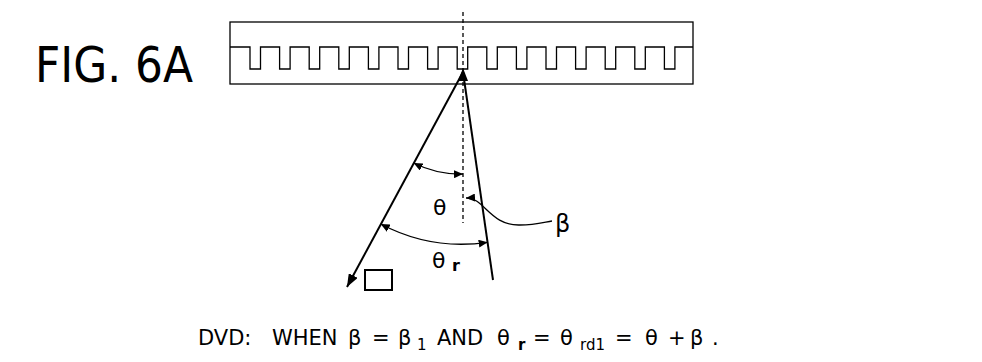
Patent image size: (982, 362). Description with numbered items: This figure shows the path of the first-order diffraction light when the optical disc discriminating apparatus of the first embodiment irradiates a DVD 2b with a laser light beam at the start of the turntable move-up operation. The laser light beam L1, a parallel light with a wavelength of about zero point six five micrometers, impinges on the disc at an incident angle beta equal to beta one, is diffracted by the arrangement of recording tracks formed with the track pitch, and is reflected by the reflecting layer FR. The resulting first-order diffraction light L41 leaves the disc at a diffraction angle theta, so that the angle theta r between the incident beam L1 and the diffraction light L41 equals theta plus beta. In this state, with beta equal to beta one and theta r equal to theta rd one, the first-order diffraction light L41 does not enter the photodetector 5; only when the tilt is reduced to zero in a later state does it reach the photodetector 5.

The DVD 2b is at (461, 92).
The reflecting layer FR is at (481, 91).
The photodetector 5 is at (408, 296).
The laser light beam L1 is at (506, 176).
The first-order diffraction light from DVD L41 is at (389, 179).